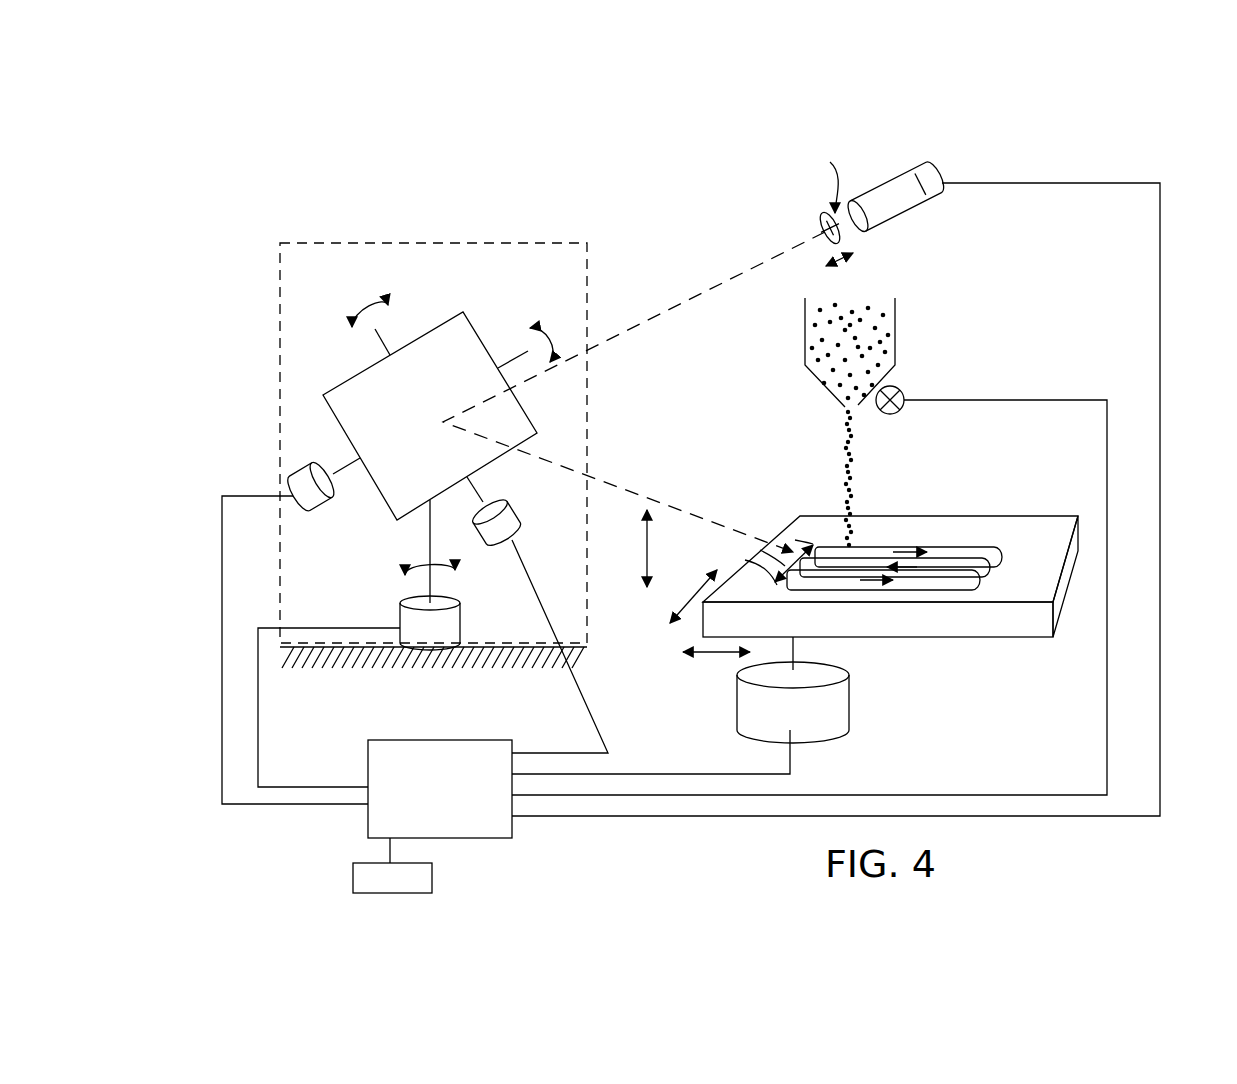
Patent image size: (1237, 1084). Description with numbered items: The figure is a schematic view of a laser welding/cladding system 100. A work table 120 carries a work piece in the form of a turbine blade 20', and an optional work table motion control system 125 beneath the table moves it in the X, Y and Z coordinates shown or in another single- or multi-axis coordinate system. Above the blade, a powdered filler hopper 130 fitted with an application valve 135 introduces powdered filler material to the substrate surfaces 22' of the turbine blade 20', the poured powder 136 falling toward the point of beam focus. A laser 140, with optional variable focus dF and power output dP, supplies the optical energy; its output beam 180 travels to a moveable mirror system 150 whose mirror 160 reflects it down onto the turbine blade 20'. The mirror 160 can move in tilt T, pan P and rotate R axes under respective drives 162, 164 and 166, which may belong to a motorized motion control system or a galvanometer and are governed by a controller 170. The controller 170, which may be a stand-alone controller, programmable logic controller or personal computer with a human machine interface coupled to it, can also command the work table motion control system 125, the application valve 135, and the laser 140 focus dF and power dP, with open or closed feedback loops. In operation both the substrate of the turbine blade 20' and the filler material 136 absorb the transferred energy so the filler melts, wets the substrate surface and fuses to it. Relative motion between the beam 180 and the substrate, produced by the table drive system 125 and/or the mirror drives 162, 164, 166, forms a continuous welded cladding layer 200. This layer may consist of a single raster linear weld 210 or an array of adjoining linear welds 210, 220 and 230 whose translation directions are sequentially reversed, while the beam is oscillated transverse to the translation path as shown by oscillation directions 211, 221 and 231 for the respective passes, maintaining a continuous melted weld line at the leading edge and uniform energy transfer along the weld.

The laser welding/cladding system 100 is at (700, 143).
The moveable mirror system 150 is at (440, 205).
The mirror 160 is at (448, 320).
The drive 162 is at (508, 525).
The drive 164 is at (297, 475).
The drive 166 is at (402, 616).
The controller 170 is at (440, 762).
The output beam 180 is at (697, 300).
The laser 140 is at (940, 170).
The powdered filler hopper 130 is at (933, 330).
The application valve 135 is at (903, 392).
The poured powder 136 is at (837, 447).
The work table 120 is at (937, 652).
The work table motion control system 125 is at (840, 712).
The welded cladding layer 200 is at (932, 578).
The linear weld 210 is at (920, 582).
The linear weld 220 is at (1000, 562).
The linear weld 230 is at (948, 555).
The oscillation direction 211 is at (745, 560).
The oscillation direction 221 is at (760, 550).
The oscillation direction 231 is at (795, 540).
The turbine blade 20' is at (1018, 497).
The substrate surfaces 22' is at (1132, 505).